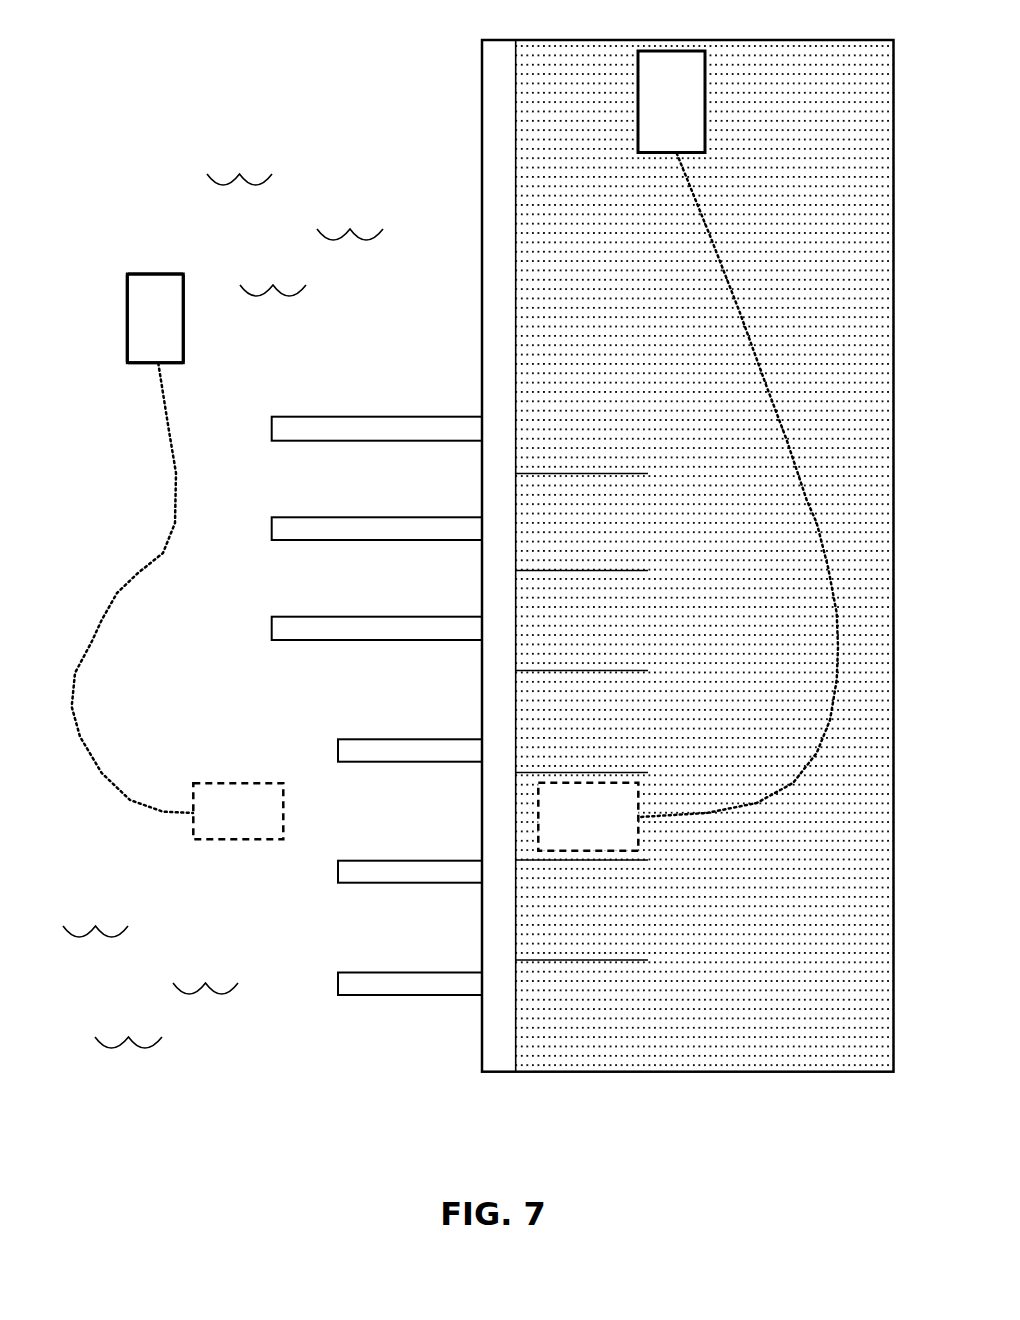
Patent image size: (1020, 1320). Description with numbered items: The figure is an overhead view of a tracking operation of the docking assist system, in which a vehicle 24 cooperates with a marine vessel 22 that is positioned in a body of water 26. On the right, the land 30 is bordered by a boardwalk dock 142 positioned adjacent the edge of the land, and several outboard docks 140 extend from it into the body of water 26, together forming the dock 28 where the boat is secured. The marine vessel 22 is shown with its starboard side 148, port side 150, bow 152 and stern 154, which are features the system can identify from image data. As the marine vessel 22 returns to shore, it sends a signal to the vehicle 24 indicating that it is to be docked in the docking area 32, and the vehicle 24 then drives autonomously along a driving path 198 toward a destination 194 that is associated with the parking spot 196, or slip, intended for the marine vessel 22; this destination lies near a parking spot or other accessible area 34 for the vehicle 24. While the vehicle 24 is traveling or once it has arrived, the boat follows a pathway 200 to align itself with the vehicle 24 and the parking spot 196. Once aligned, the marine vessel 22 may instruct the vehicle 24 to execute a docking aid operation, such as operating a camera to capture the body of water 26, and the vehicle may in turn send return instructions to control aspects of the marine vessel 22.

The marine vessel 22 is at (140, 331).
The vehicle 24 is at (648, 58).
The body of water 26 is at (360, 351).
The dock 28 is at (413, 1047).
The land 30 is at (793, 919).
The docking area 32 is at (332, 828).
The accessible area 34 is at (661, 797).
The outboard dock 140 is at (272, 428).
The boardwalk dock 142 is at (498, 1073).
The starboard side 148 is at (127, 342).
The port side 150 is at (183, 352).
The bow 152 is at (138, 363).
The stern 154 is at (145, 272).
The destination 194 is at (588, 817).
The parking spot 196 is at (385, 813).
The driving path 198 is at (837, 672).
The pathway 200 is at (95, 763).